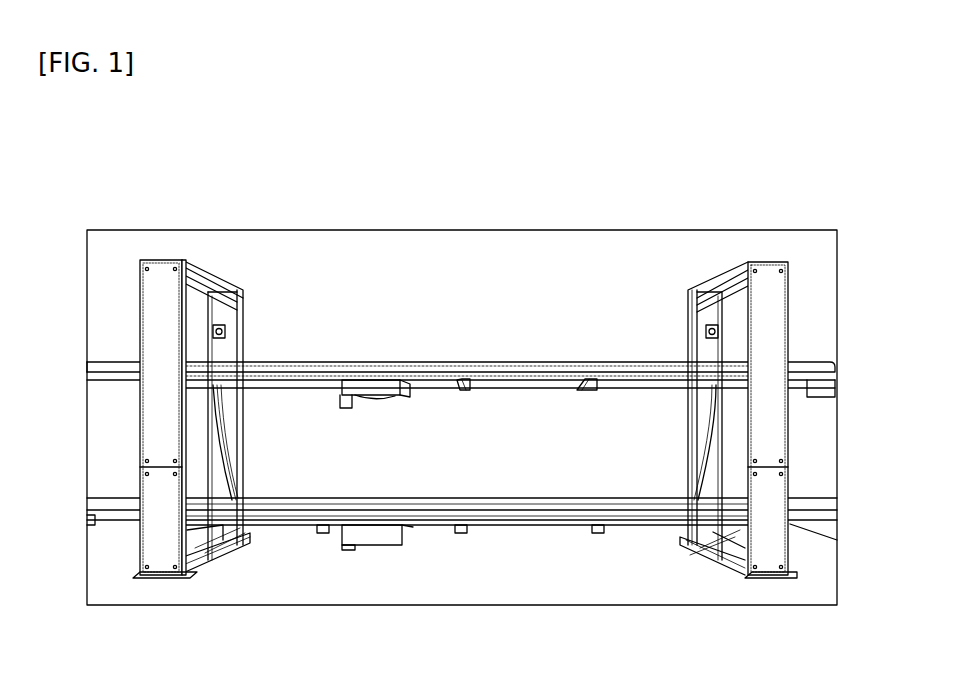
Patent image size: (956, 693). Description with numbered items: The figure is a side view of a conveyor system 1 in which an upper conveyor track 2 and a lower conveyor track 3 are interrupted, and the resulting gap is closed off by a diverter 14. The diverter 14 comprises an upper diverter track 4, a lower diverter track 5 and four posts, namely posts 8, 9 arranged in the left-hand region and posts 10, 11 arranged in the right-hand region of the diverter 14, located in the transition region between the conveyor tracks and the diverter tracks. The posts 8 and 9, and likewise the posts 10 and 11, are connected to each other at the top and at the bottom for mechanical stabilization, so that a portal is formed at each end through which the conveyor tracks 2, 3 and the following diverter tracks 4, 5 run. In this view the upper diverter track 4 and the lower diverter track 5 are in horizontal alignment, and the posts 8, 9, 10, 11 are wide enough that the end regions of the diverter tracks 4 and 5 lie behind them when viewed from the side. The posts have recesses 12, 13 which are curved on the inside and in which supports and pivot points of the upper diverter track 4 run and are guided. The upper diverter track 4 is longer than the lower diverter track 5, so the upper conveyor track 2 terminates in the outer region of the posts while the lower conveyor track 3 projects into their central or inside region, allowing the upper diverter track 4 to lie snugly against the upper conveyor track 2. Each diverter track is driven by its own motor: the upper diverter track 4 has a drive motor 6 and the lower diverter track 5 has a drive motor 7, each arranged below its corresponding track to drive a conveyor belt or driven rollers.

The conveyor system 1 is at (507, 196).
The upper conveyor track 2 is at (97, 360).
The lower conveyor track 3 is at (125, 520).
The upper diverter track 4 is at (537, 362).
The lower diverter track 5 is at (512, 527).
The drive motor 6 is at (362, 385).
The drive motor 7 is at (387, 537).
The post 8 is at (168, 543).
The post 9 is at (243, 323).
The post 10 is at (762, 545).
The post 11 is at (708, 305).
The recess 12 is at (230, 432).
The recess 13 is at (693, 303).
The diverter 14 is at (535, 290).